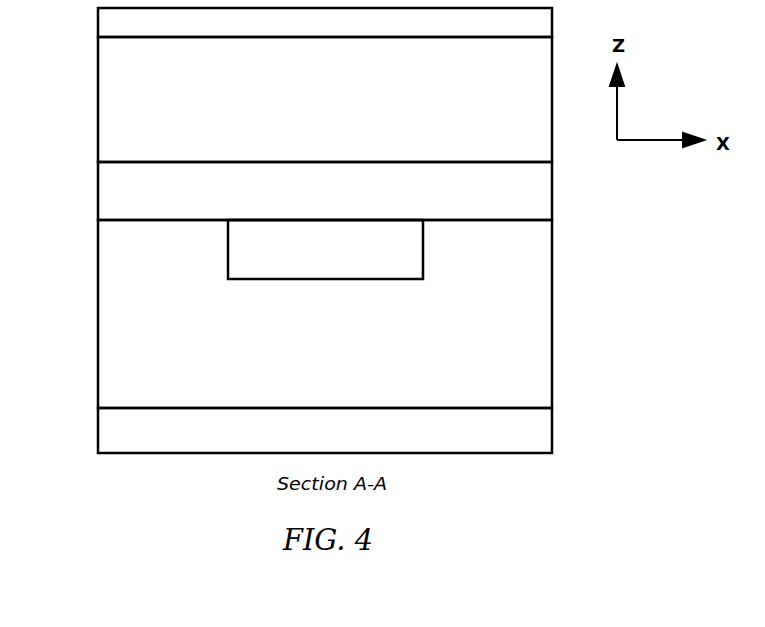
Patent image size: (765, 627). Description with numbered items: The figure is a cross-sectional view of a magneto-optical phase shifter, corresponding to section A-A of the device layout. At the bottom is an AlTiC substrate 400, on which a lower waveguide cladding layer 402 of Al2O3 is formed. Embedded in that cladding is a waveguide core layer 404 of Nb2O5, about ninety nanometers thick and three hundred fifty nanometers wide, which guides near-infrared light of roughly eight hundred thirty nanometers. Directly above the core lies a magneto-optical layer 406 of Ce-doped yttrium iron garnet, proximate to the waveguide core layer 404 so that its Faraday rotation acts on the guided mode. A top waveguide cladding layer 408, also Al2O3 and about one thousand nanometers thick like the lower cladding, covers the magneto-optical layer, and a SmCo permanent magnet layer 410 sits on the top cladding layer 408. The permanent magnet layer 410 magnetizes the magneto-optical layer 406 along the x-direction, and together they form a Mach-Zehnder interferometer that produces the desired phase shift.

The substrate 400 is at (103, 433).
The waveguide cladding layer 402 is at (103, 321).
The waveguide core layer 404 is at (236, 246).
The magneto-optical layer 406 is at (100, 190).
The waveguide cladding layer 408 is at (104, 94).
The permanent magnet layer 410 is at (107, 20).